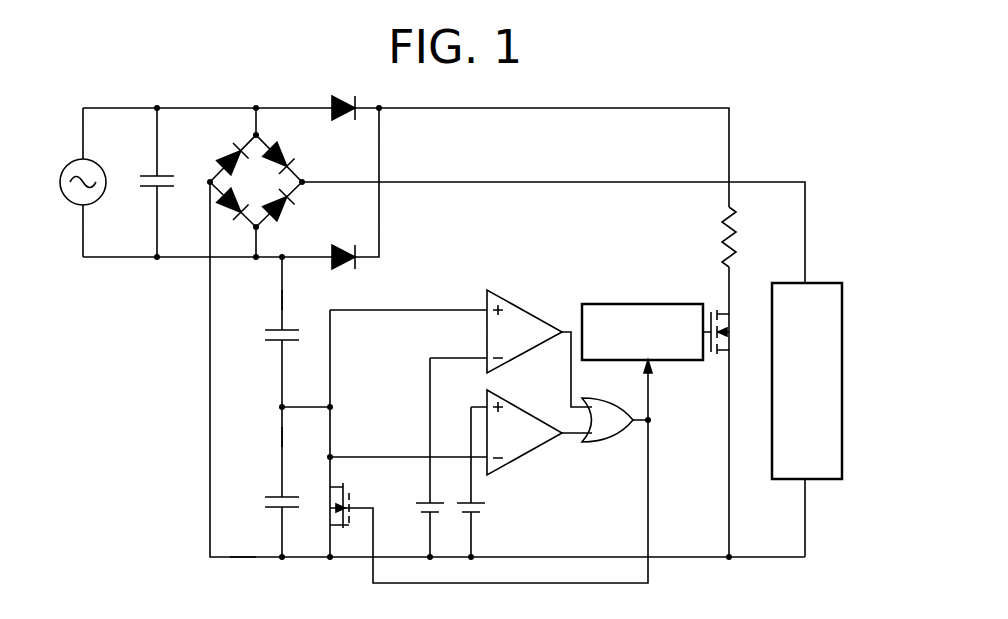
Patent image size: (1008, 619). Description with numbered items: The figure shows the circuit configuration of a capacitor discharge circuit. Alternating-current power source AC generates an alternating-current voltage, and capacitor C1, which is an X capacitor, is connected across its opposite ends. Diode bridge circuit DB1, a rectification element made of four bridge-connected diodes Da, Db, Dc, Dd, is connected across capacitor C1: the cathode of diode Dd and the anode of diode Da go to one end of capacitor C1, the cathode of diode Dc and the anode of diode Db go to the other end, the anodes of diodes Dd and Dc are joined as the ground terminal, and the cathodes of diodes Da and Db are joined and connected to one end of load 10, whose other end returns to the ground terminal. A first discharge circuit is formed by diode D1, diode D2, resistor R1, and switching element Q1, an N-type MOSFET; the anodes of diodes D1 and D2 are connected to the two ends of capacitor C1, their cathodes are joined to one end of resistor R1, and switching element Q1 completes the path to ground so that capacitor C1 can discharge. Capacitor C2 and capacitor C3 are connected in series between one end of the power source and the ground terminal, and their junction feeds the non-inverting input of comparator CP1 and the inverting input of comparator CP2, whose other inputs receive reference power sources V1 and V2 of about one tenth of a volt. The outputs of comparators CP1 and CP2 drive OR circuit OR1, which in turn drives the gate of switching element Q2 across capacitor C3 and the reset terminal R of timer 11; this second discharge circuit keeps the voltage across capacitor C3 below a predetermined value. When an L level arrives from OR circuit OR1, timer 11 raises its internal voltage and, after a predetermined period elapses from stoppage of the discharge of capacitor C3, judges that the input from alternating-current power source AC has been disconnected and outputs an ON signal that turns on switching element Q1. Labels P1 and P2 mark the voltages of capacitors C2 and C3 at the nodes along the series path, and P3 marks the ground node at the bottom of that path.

The load 10 is at (842, 345).
The timer 11 is at (633, 303).
The alternating-current power source AC is at (75, 168).
The capacitor C1 is at (149, 182).
The diode bridge circuit DB1 is at (256, 167).
The diode Da is at (291, 151).
The diode Db is at (291, 212).
The diode Dc is at (232, 220).
The diode Dd is at (221, 152).
The diode D1 is at (346, 93).
The diode D2 is at (346, 271).
The voltage of capacitor C2 P1 is at (282, 301).
The voltage of capacitor C3 P2 is at (282, 440).
The node P3 is at (243, 558).
The capacitor C2 is at (268, 350).
The capacitor C3 is at (268, 516).
The switching element Q1 is at (709, 314).
The switching element Q2 is at (353, 496).
The reference power source V1 is at (410, 510).
The reference power source V2 is at (490, 519).
The comparator CP1 is at (524, 325).
The comparator CP2 is at (524, 426).
The OR circuit OR1 is at (606, 435).
The reset terminal R is at (659, 390).
The resistor R1 is at (747, 237).